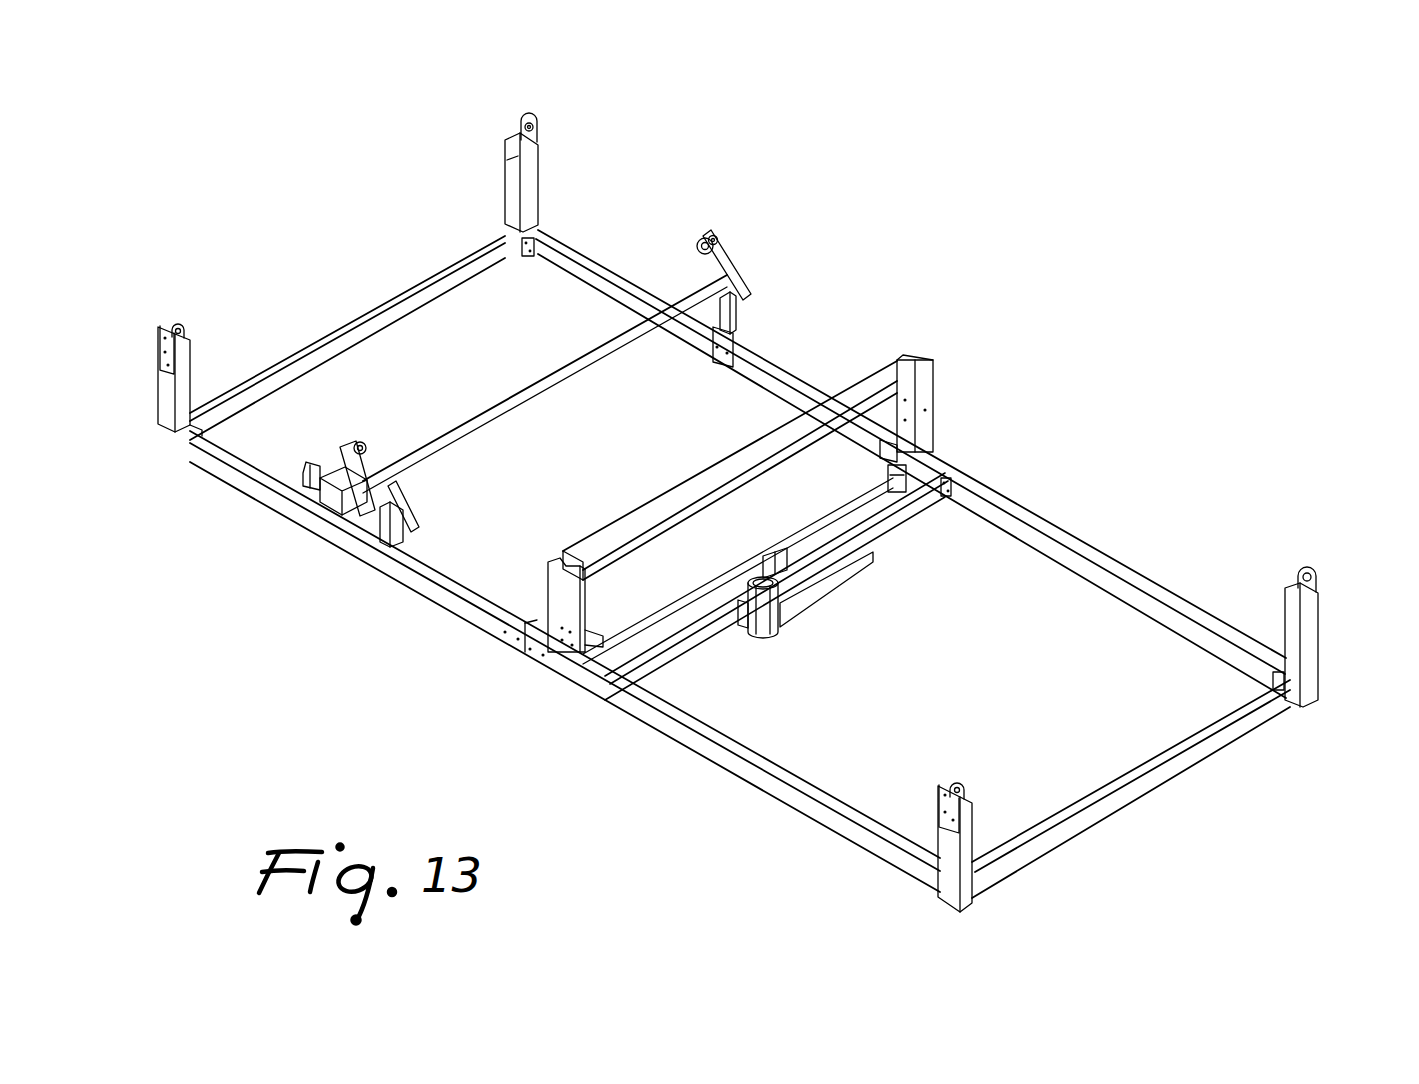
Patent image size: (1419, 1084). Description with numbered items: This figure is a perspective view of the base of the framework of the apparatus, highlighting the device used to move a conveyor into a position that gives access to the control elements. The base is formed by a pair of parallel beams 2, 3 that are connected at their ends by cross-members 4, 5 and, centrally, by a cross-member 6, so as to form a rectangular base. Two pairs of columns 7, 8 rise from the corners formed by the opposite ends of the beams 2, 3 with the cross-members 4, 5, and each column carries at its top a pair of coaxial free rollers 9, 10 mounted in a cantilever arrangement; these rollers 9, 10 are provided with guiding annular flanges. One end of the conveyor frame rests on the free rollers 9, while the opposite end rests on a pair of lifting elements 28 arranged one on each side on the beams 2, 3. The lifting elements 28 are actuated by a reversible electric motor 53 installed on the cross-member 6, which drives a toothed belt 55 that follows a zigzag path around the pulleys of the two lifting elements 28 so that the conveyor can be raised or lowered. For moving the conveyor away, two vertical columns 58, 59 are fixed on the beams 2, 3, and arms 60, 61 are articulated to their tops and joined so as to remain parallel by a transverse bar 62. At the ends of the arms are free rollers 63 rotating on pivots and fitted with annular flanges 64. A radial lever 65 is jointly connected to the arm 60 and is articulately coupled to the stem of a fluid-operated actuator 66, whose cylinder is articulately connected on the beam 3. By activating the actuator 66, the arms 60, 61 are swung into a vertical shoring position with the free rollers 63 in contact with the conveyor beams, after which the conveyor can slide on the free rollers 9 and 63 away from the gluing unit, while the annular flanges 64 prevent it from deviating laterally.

The beam 2 is at (611, 263).
The beam 3 is at (445, 612).
The cross-member 4 is at (357, 320).
The cross-member 5 is at (1130, 775).
The cross-member 6 is at (897, 522).
The column 7 is at (192, 368).
The column 8 is at (1320, 680).
The free rollers 9 is at (181, 324).
The free rollers 10 is at (1300, 578).
The lifting elements 28 is at (944, 390).
The electric motor 53 is at (780, 637).
The toothed belt 55 is at (820, 592).
The vertical column 58 is at (385, 542).
The vertical column 59 is at (746, 320).
The arm 60 is at (352, 496).
The arm 61 is at (746, 264).
The transverse bar 62 is at (515, 405).
The free rollers 63 is at (700, 242).
The annular flanges 64 is at (712, 232).
The radial lever 65 is at (416, 502).
The fluid-operated actuator 66 is at (312, 488).